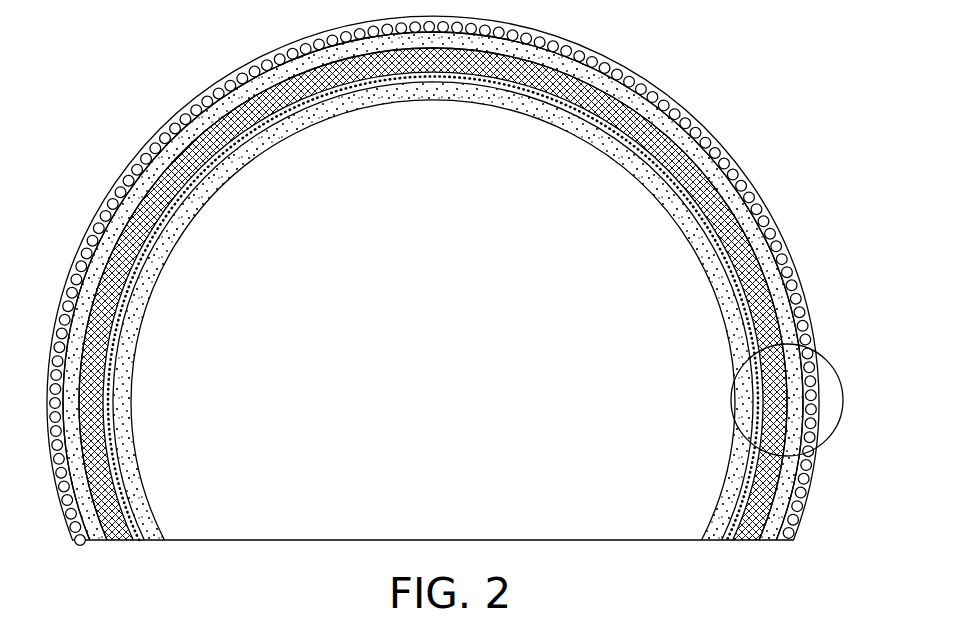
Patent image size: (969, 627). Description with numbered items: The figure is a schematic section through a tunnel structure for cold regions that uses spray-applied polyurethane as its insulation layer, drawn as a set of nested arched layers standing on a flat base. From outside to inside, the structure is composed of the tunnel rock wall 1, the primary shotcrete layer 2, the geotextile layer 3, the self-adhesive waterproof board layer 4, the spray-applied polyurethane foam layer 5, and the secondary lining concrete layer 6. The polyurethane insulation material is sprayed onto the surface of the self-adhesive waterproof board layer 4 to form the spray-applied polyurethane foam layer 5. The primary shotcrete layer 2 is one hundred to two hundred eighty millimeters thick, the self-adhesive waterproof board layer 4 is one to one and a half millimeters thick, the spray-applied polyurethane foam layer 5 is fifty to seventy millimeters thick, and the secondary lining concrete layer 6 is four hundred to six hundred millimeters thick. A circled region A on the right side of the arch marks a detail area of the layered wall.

The tunnel rock wall 1 is at (808, 313).
The primary shotcrete layer 2 is at (778, 313).
The geotextile layer 3 is at (806, 352).
The self-adhesive waterproof board layer 4 is at (743, 270).
The spray-applied polyurethane foam layer 5 is at (740, 213).
The secondary lining concrete layer 6 is at (680, 217).
The detail region A is at (842, 395).